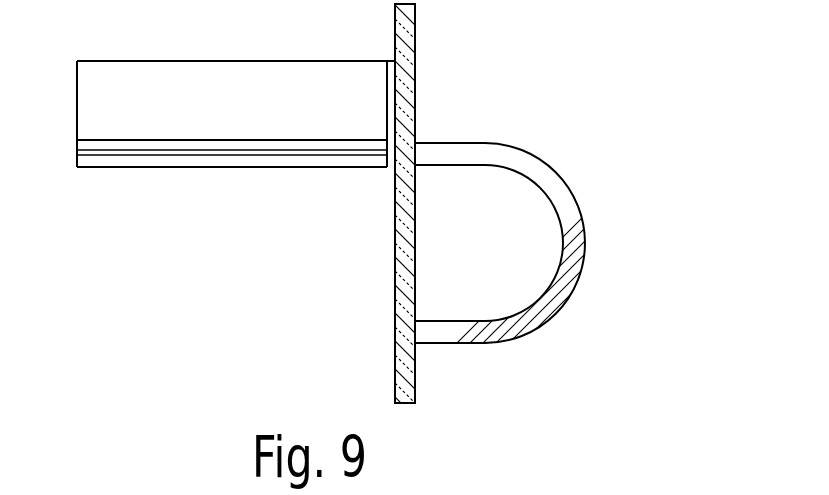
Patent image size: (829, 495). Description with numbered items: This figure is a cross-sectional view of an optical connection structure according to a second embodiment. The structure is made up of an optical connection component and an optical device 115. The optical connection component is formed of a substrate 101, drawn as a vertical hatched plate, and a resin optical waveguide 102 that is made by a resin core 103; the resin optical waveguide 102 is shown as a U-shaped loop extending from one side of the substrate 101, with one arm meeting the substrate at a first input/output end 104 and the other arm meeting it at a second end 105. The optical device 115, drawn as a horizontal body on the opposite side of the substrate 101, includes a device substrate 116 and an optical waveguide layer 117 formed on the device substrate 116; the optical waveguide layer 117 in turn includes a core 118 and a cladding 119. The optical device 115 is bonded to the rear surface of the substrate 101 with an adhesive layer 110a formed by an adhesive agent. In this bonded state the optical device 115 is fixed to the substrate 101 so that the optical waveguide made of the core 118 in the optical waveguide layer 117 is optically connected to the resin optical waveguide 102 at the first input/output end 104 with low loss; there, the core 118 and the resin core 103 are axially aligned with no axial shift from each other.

The substrate 101 is at (395, 285).
The resin optical waveguide 102 is at (604, 237).
The resin core 103 is at (515, 145).
The first input/output end 104 is at (420, 152).
The lower arm portion 105 is at (420, 332).
The adhesive layer 110a is at (387, 61).
The optical device 115 is at (283, 194).
The device substrate 116 is at (257, 61).
The optical waveguide layer 117 is at (75, 141).
The core 118 is at (228, 153).
The cladding 119 is at (166, 160).